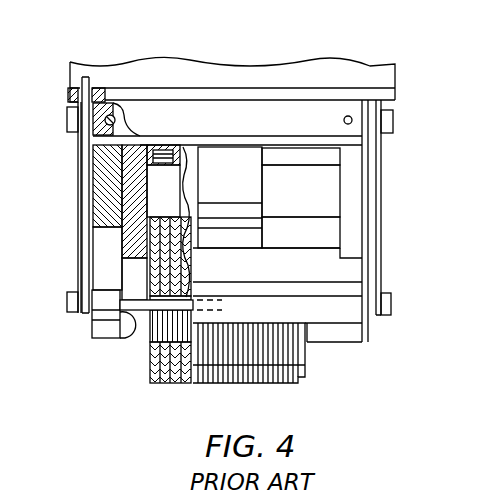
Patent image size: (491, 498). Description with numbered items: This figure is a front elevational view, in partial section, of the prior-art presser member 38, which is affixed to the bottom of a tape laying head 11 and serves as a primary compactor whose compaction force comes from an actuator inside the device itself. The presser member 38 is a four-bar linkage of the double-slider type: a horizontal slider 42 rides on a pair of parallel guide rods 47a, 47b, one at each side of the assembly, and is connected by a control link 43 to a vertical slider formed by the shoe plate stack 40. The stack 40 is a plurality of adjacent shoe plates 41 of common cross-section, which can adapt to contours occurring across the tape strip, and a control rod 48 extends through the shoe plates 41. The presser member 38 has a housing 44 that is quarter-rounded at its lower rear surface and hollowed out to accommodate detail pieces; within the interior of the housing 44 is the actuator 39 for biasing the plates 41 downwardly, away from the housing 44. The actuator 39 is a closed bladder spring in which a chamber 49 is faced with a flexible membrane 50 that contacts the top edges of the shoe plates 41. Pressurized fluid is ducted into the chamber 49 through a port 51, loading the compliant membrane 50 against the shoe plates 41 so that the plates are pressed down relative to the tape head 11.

The tape laying head 11 is at (182, 62).
The presser member 38 is at (254, 118).
The actuator 39 is at (118, 167).
The shoe plate stack 40 is at (307, 353).
The shoe plates 41 is at (248, 375).
The horizontal slider 42 is at (92, 115).
The control link 43 is at (80, 197).
The housing 44 is at (90, 208).
The guide rod 47a is at (120, 111).
The guide rod 47b is at (344, 121).
The control rod 48 is at (133, 338).
The chamber 49 is at (147, 178).
The flexible membrane 50 is at (173, 213).
The port 51 is at (164, 168).